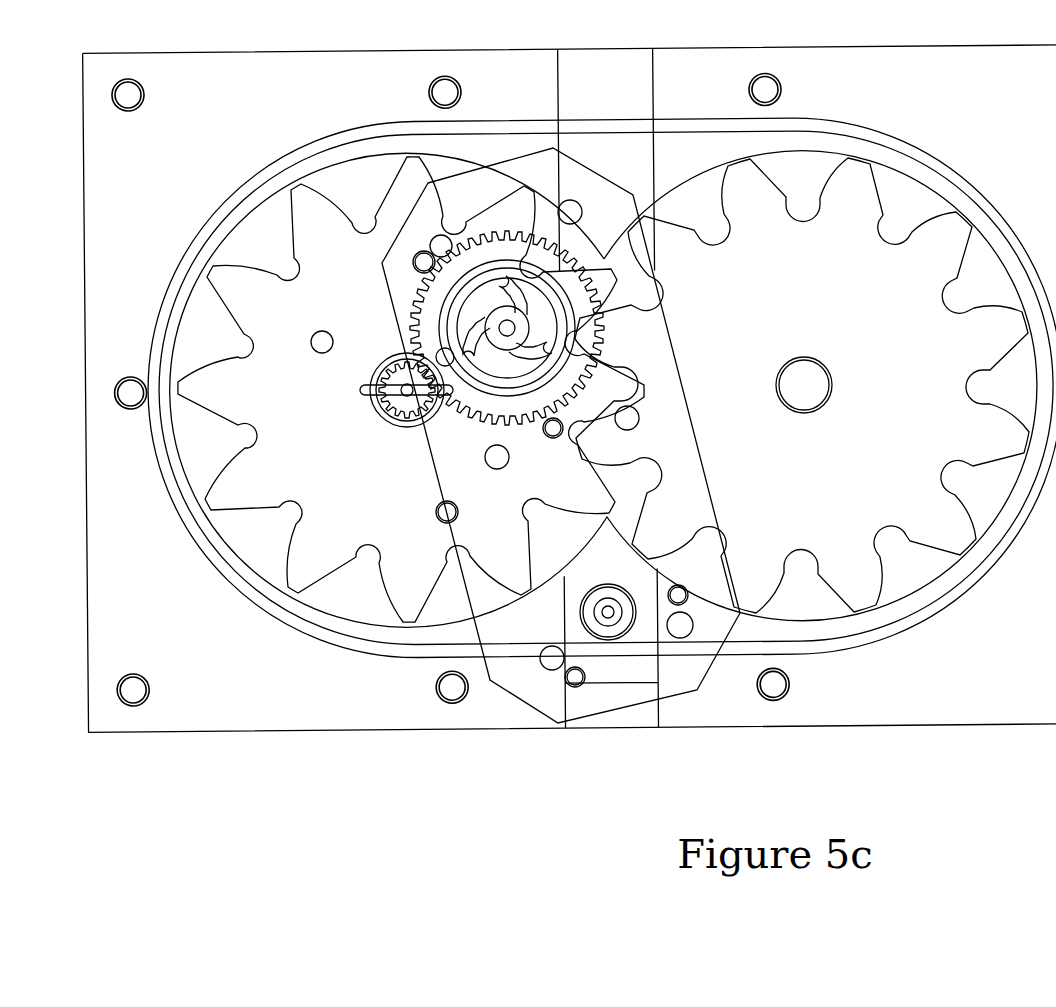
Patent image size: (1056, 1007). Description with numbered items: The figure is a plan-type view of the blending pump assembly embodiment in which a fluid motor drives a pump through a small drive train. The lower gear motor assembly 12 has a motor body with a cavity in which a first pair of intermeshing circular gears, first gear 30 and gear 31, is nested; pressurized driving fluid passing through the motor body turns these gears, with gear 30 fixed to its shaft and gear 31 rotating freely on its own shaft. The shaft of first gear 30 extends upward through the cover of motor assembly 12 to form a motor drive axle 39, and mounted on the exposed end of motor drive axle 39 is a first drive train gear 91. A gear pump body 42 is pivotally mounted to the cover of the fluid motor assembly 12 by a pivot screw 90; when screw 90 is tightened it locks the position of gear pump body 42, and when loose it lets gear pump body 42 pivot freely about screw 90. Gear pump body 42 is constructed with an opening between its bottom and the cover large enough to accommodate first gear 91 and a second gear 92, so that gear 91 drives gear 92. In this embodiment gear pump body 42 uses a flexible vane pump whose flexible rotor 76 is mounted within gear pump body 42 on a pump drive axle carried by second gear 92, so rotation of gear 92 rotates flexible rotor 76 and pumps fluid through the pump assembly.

The lower gear motor assembly 12 is at (185, 752).
The first gear 30 is at (352, 503).
The second gear of first pair 31 is at (835, 474).
The motor drive axle 39 is at (398, 366).
The gear pump body 42 is at (507, 692).
The flexible rotor 76 is at (484, 372).
The pivot screw 90 is at (612, 616).
The first drive train gear 91 is at (371, 417).
The second gear 92 is at (556, 325).